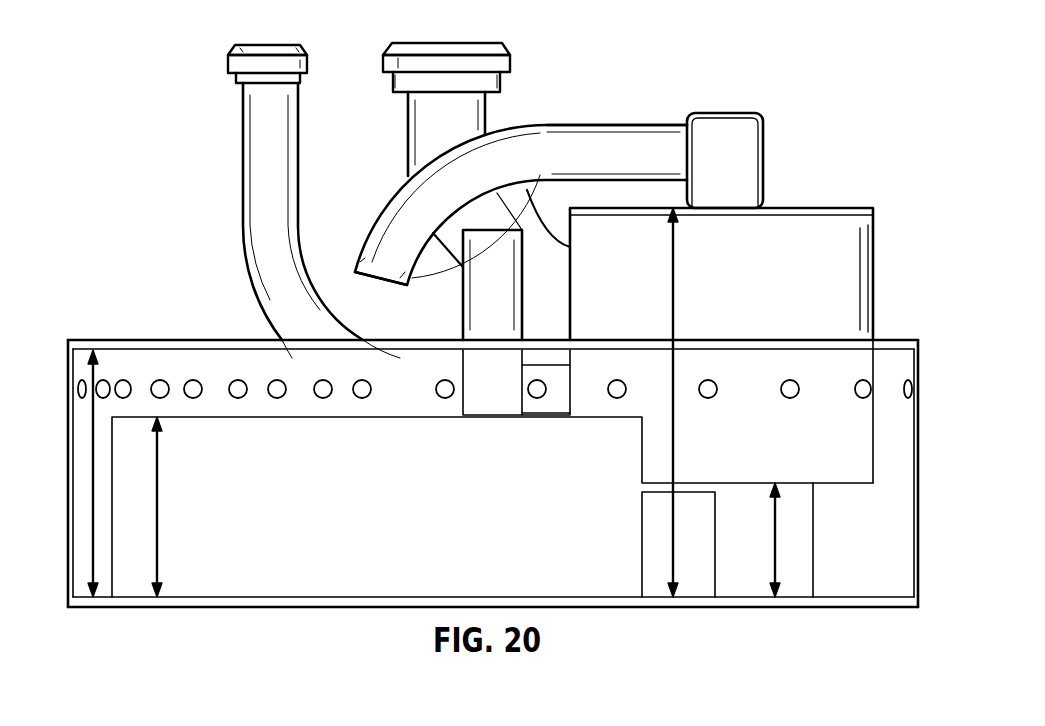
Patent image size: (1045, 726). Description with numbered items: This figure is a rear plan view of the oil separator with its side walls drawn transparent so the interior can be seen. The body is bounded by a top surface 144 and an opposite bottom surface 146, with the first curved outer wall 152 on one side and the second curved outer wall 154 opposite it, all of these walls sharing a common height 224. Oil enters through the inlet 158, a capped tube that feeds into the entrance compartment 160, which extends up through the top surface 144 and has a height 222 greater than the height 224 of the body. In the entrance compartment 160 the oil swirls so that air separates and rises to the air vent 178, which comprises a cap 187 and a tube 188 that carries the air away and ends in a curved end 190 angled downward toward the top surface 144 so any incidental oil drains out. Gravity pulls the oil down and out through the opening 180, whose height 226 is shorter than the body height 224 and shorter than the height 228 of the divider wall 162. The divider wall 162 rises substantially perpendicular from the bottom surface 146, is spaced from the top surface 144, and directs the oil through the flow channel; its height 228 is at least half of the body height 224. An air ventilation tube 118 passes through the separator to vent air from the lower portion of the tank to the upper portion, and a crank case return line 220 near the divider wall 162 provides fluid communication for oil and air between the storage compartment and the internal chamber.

The air ventilation tube 118 is at (493, 290).
The top surface 144 is at (193, 338).
The bottom surface 146 is at (600, 605).
The first curved outer wall 152 is at (67, 442).
The second curved outer wall 154 is at (918, 441).
The inlet 158 is at (483, 110).
The entrance compartment 160 is at (850, 253).
The divider wall 162 is at (330, 555).
The air vent 178 is at (568, 143).
The opening 180 is at (812, 538).
The cap 187 is at (722, 127).
The tube 188 is at (663, 133).
The curved end 190 is at (385, 243).
The crank case return line 220 is at (253, 117).
The height of entrance compartment 222 is at (673, 267).
The height of body 224 is at (93, 385).
The height of opening 226 is at (775, 545).
The height of divider wall 228 is at (157, 540).